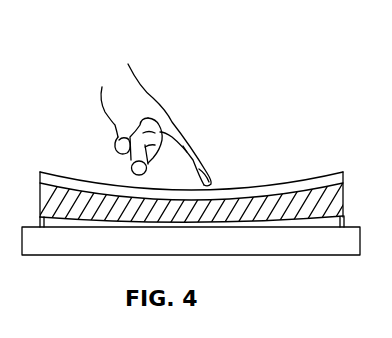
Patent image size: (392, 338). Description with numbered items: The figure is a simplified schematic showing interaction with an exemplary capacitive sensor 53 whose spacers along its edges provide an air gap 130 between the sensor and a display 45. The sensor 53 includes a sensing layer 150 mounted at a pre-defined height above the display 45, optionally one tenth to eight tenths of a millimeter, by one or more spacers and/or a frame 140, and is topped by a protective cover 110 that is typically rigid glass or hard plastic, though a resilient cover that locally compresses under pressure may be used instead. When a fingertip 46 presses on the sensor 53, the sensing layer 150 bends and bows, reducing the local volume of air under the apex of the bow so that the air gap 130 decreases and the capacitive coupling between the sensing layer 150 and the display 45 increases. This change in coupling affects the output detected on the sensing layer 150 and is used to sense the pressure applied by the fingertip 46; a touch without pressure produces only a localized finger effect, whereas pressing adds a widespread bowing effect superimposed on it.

The sensor 53 is at (275, 105).
The fingertip 46 is at (206, 152).
The protective cover 110 is at (243, 184).
The air gap 130 is at (77, 225).
The spacers or frame 140 is at (40, 222).
The sensing layer 150 is at (346, 195).
The display 45 is at (243, 255).